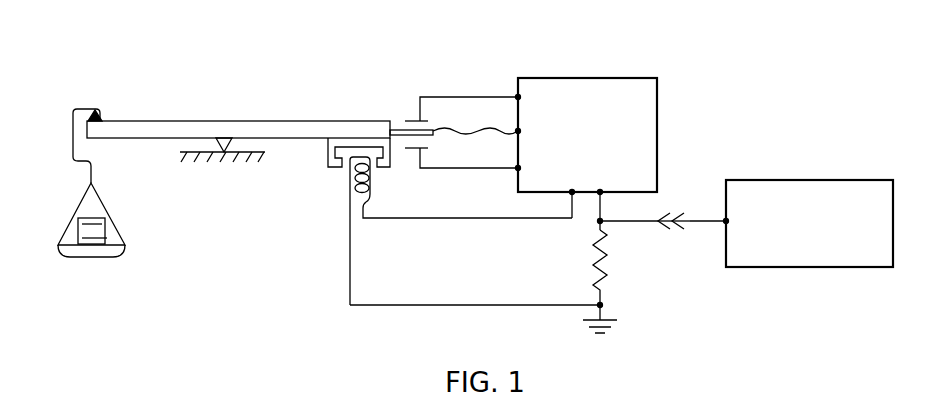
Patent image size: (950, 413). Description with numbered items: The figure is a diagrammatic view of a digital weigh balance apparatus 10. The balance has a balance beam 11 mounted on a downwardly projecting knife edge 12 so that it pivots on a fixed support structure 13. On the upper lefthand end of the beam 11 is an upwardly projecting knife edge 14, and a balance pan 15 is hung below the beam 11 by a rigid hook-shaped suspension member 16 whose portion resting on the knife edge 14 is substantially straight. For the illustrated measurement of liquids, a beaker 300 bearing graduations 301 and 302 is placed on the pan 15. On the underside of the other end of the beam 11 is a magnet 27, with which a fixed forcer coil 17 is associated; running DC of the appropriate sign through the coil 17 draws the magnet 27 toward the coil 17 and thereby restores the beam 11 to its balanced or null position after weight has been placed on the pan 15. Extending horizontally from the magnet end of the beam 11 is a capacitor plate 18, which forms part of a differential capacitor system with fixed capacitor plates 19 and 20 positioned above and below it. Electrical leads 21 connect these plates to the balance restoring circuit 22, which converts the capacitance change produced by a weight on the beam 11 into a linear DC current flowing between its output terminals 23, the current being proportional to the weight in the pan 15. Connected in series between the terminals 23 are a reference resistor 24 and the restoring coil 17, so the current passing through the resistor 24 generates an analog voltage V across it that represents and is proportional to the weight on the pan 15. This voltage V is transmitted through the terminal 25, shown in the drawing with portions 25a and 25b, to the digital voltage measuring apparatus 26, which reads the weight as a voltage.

The digital weigh balance apparatus 10 is at (366, 73).
The balance beam 11 is at (188, 128).
The downwardly projecting knife edge 12 is at (232, 150).
The fixed support structure 13 is at (247, 160).
The upwardly projecting knife edge 14 is at (97, 109).
The balance pan 15 is at (117, 257).
The hook-shaped suspension member 16 is at (73, 123).
The forcer coil 17 is at (372, 185).
The capacitor plate 18 is at (405, 128).
The fixed capacitor plate 19 is at (430, 120).
The fixed capacitor plate 20 is at (430, 150).
The electrical leads 21 is at (452, 96).
The balance restoring circuit 22 is at (649, 107).
The output terminals 23 is at (600, 197).
The reference resistor 24 is at (597, 252).
The terminal 25 is at (678, 234).
The connection line portion 25a is at (627, 225).
The connection line portion 25b is at (692, 219).
The voltage measuring apparatus 26 is at (857, 197).
The magnet 27 is at (328, 165).
The beaker 300 is at (90, 217).
The graduation 301 is at (118, 238).
The graduation 302 is at (103, 224).